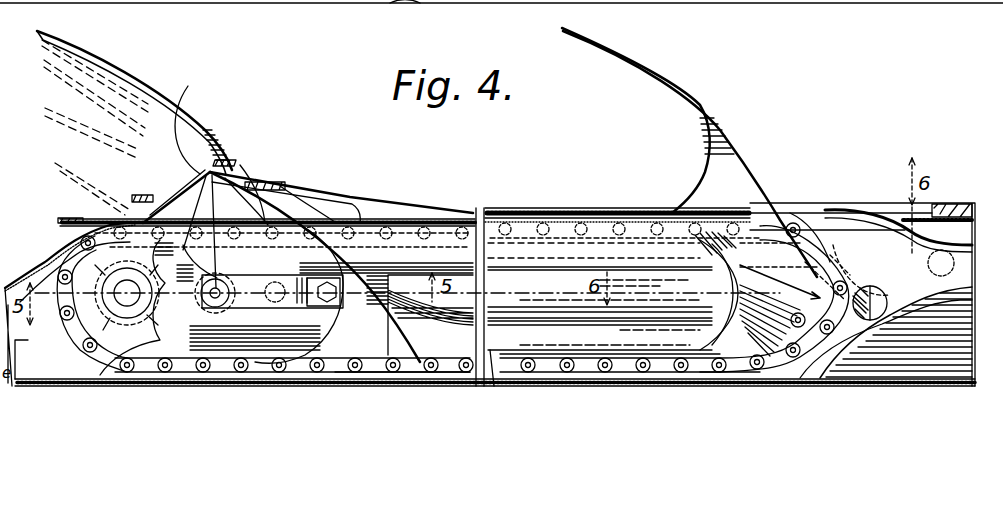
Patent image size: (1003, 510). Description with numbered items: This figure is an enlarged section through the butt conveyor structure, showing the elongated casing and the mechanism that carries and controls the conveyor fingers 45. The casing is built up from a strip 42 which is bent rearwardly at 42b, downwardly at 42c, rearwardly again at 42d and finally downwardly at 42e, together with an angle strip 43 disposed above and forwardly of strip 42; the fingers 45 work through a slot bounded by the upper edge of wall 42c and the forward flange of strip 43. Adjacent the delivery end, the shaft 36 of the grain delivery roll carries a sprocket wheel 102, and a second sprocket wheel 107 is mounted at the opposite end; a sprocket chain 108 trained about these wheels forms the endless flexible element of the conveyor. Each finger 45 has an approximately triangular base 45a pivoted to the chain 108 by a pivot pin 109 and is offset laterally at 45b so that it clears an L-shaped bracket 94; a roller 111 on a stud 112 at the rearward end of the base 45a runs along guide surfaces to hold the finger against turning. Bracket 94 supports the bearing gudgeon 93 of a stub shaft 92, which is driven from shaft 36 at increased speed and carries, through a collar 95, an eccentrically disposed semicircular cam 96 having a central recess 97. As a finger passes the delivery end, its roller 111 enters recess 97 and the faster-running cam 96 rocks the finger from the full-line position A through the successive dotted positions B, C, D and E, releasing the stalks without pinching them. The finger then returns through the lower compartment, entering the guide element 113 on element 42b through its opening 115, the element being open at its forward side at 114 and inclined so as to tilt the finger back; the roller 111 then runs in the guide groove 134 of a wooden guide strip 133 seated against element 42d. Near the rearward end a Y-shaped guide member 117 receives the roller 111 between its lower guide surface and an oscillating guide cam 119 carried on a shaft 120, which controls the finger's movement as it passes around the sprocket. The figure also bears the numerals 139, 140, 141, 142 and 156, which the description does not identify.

The full line position A is at (97, 62).
The dotted line position B is at (40, 44).
The dotted line position C is at (44, 78).
The dotted line position D is at (44, 112).
The dotted line position E is at (52, 162).
The shaft 36 is at (75, 330).
The strip 42 is at (420, 205).
The strip element 42b is at (433, 250).
The strip element 42c is at (440, 215).
The strip element 42d is at (460, 210).
The strip element 42e is at (870, 372).
The angle strip 43 is at (815, 213).
The fingers 45 is at (173, 94).
The base portion 45a is at (338, 383).
The lateral offset 45b is at (352, 198).
The stub-shaft 92 is at (282, 215).
The bearing gudgeon 93 is at (218, 237).
The L-shape bracket 94 is at (300, 347).
The collar 95 is at (240, 162).
The cam member 96 is at (247, 182).
The central recess 97 is at (338, 196).
The sprocket wheel 102 is at (120, 303).
The sprocket wheel 107 is at (702, 315).
The sprocket chain 108 is at (578, 382).
The pivot pin 109 is at (312, 350).
The roller 111 is at (425, 386).
The stud 112 is at (430, 345).
The finger receiving and guide element 113 is at (420, 168).
The open forward side 114 is at (380, 178).
The opening 115 is at (190, 200).
The guide member 117 is at (900, 335).
The oscillating guide cam 119 is at (860, 262).
The shaft 120 is at (868, 250).
The guide strip 133 is at (505, 350).
The guide groove 134 is at (560, 307).
The arm 139 is at (306, 188).
The lug 140 is at (238, 150).
The pin 141 is at (112, 198).
The pin 142 is at (60, 222).
The cover plate 156 is at (592, 210).